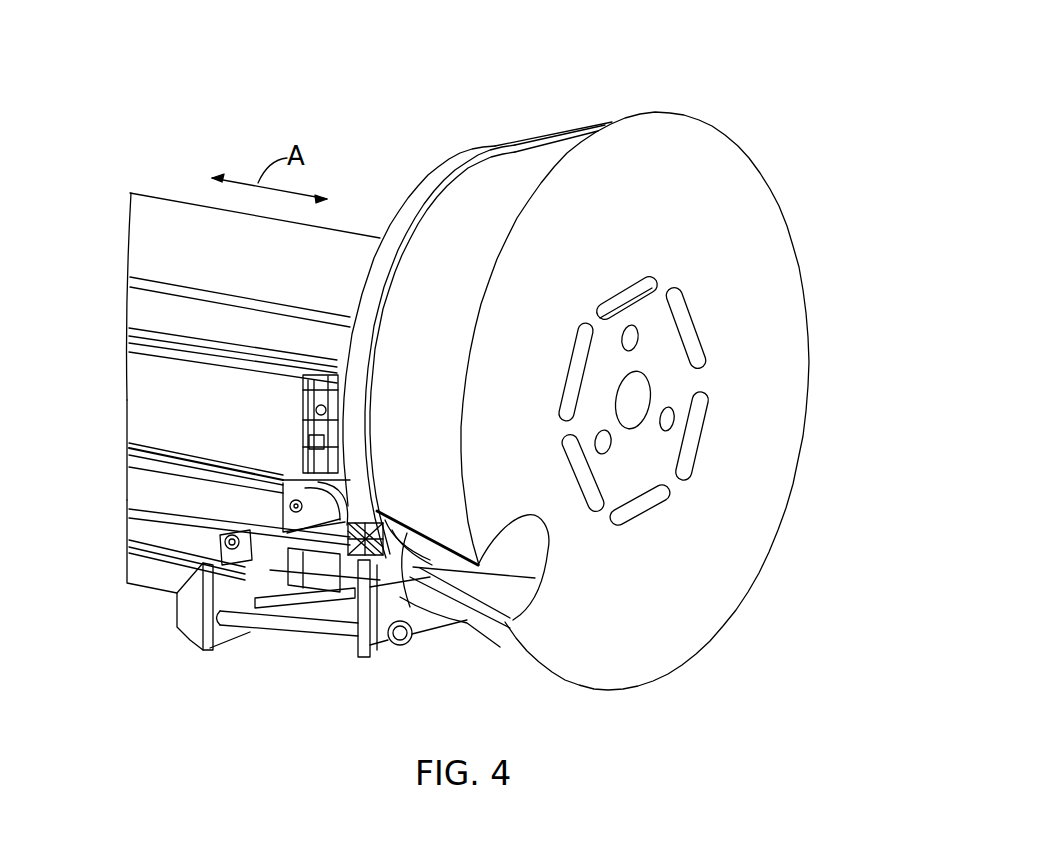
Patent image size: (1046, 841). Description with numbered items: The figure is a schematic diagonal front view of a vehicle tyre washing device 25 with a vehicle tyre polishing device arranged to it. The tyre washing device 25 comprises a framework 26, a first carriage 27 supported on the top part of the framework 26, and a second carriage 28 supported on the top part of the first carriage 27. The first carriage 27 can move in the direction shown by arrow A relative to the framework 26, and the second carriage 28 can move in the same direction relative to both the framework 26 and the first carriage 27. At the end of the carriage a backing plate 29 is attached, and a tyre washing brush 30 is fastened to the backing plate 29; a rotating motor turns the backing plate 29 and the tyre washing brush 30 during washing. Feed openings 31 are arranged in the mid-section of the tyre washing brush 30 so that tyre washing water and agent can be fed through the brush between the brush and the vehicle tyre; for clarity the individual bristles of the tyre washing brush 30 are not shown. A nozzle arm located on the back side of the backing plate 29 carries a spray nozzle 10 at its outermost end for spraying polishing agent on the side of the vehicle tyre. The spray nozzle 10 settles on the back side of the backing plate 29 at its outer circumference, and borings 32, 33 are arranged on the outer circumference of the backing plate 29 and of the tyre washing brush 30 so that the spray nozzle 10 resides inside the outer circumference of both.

The spray nozzle 10 is at (355, 550).
The vehicle tyre washing device 25 is at (243, 105).
The framework 26 is at (142, 523).
The first carriage 27 is at (148, 395).
The second carriage 28 is at (158, 250).
The backing plate 29 is at (428, 188).
The tyre washing brush 30 is at (698, 143).
The feed openings 31 is at (632, 337).
The boring 32 is at (389, 553).
The boring 33 is at (490, 588).